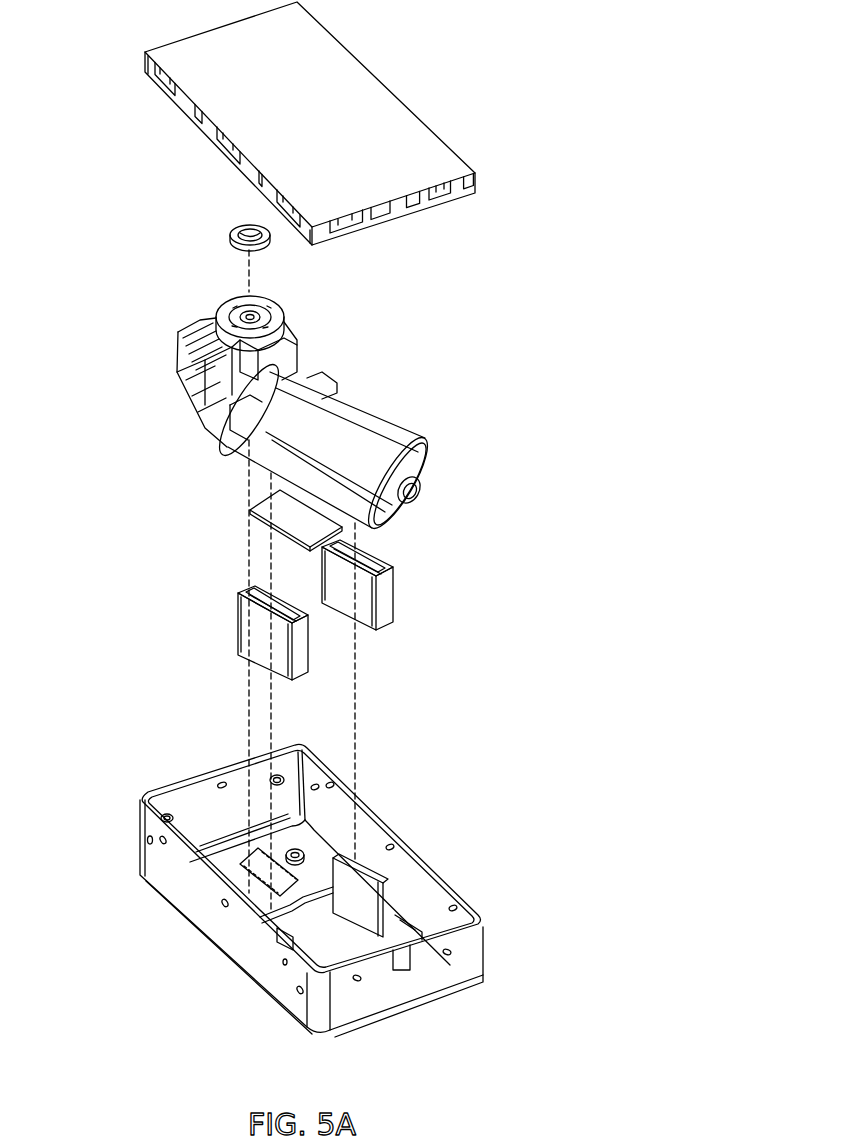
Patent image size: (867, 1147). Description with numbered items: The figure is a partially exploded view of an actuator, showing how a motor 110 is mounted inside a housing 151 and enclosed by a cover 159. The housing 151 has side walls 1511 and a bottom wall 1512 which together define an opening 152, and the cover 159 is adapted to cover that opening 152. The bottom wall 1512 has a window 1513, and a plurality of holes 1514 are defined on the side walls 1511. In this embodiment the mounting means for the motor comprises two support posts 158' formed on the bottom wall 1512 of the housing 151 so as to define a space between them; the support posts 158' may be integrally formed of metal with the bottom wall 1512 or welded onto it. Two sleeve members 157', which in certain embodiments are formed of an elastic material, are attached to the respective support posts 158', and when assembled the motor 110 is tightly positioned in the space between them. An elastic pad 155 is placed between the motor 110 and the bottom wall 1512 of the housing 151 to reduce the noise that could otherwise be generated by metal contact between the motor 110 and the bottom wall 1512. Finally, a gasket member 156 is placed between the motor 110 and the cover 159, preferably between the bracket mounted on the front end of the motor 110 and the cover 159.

The cover 159 is at (420, 140).
The gasket member 156 is at (230, 238).
The motor 110 is at (377, 435).
The elastic pad 155 is at (292, 513).
The sleeve member 157' is at (322, 610).
The housing 151 is at (480, 913).
The side wall 1511 is at (215, 913).
The bottom wall 1512 is at (330, 933).
The window 1513 is at (247, 877).
The hole 1514 is at (147, 843).
The opening 152 is at (312, 857).
The support post 158' is at (426, 872).